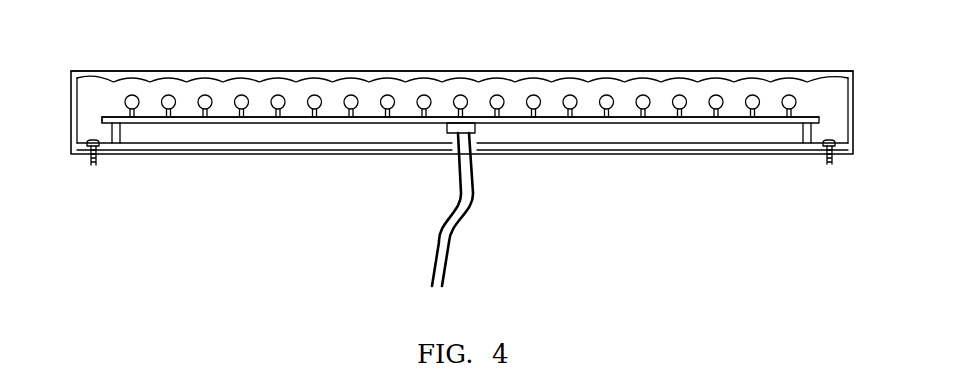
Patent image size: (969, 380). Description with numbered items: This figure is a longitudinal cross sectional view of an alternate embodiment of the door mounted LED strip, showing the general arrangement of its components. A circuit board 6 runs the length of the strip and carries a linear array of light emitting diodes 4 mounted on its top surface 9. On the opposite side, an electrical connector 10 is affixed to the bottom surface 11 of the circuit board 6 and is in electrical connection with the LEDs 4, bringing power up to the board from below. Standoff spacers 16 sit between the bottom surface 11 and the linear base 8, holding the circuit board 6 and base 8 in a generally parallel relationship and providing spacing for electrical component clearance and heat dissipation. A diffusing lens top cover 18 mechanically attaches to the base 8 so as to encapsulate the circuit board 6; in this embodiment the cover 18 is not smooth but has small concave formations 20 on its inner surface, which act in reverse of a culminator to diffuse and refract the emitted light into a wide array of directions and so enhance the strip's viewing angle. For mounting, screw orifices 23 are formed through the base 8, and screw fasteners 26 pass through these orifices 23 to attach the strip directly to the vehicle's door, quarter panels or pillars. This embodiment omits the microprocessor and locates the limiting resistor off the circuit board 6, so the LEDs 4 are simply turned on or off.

The light emitting diodes 4 is at (202, 95).
The circuit board 6 is at (103, 117).
The linear base 8 is at (72, 149).
The top surface 9 is at (406, 117).
The electrical connector 10 is at (476, 132).
The bottom surface 11 is at (276, 121).
The standoff spacers 16 is at (122, 133).
The diffusing lens top cover 18 is at (623, 71).
The concave formations 20 is at (750, 78).
The screw orifices 23 is at (826, 148).
The screw fasteners 26 is at (833, 160).